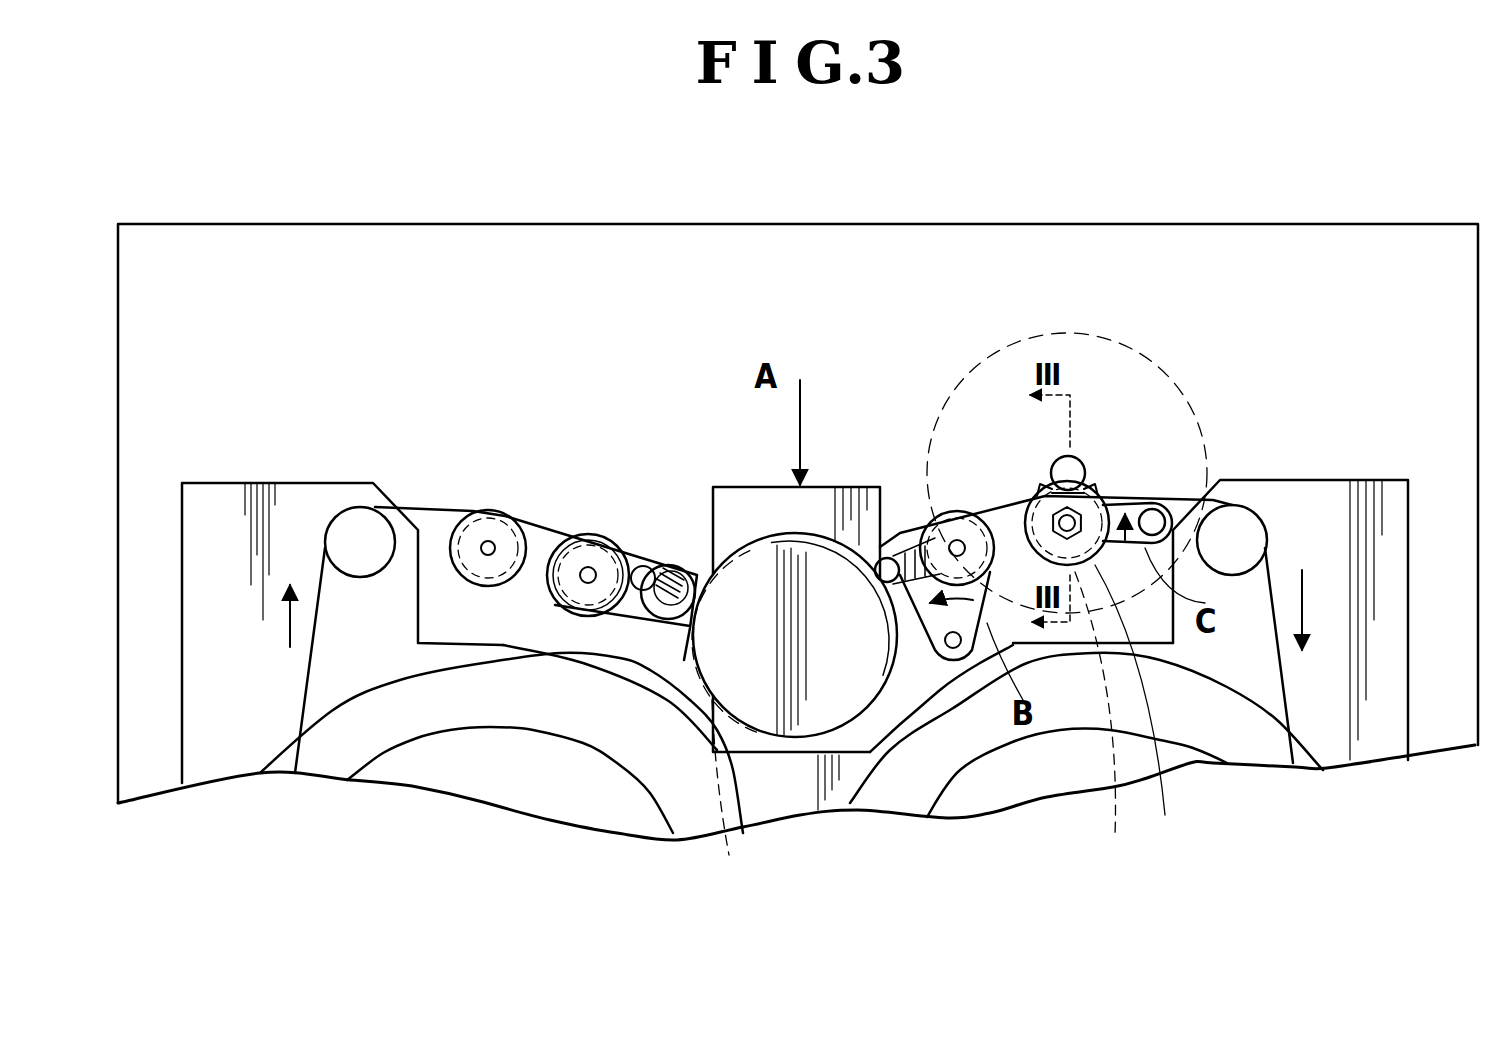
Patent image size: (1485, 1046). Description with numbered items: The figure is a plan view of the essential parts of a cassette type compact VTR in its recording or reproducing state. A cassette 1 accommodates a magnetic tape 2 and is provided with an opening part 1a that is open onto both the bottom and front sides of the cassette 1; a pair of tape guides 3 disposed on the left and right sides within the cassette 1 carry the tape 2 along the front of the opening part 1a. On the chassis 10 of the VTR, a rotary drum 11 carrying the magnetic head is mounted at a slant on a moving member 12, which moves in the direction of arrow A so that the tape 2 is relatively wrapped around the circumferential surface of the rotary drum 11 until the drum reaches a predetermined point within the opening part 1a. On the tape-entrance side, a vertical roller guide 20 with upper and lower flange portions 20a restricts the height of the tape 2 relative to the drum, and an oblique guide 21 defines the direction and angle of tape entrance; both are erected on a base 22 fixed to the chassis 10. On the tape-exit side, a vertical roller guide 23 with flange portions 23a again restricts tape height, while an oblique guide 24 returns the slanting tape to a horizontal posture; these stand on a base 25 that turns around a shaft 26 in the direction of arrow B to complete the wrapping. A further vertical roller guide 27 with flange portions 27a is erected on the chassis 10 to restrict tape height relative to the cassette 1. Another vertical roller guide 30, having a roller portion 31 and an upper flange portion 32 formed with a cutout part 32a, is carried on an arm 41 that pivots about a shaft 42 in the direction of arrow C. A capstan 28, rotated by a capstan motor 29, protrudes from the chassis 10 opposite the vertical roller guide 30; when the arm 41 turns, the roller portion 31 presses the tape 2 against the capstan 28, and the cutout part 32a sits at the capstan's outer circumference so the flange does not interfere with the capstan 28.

The cassette 1 is at (1393, 497).
The opening part 1a is at (697, 540).
The magnetic tape 2 is at (307, 683).
The tape guides 3 is at (355, 530).
The chassis 10 is at (343, 255).
The rotary drum 11 is at (805, 703).
The moving member 12 is at (745, 505).
The vertical roller guide 20 is at (586, 562).
The upper and lower flange portions 20a is at (613, 532).
The oblique guide 21 is at (650, 597).
The base 22 is at (630, 597).
The vertical roller guide 23 is at (955, 545).
The upper and lower flange portions 23a is at (962, 525).
The oblique guide 24 is at (890, 560).
The base 25 is at (982, 657).
The shaft 26 is at (950, 652).
The vertical roller guide 27 is at (475, 532).
The upper and lower flange portions 27a is at (493, 508).
The capstan 28 is at (1073, 478).
The capstan motor 29 is at (1158, 372).
The vertical roller guide 30 is at (1140, 708).
The roller portion 31 is at (1106, 722).
The upper flange portion 32 is at (1102, 493).
The cutout part 32a is at (1055, 480).
The arm 41 is at (1158, 505).
The shaft 42 is at (1158, 500).